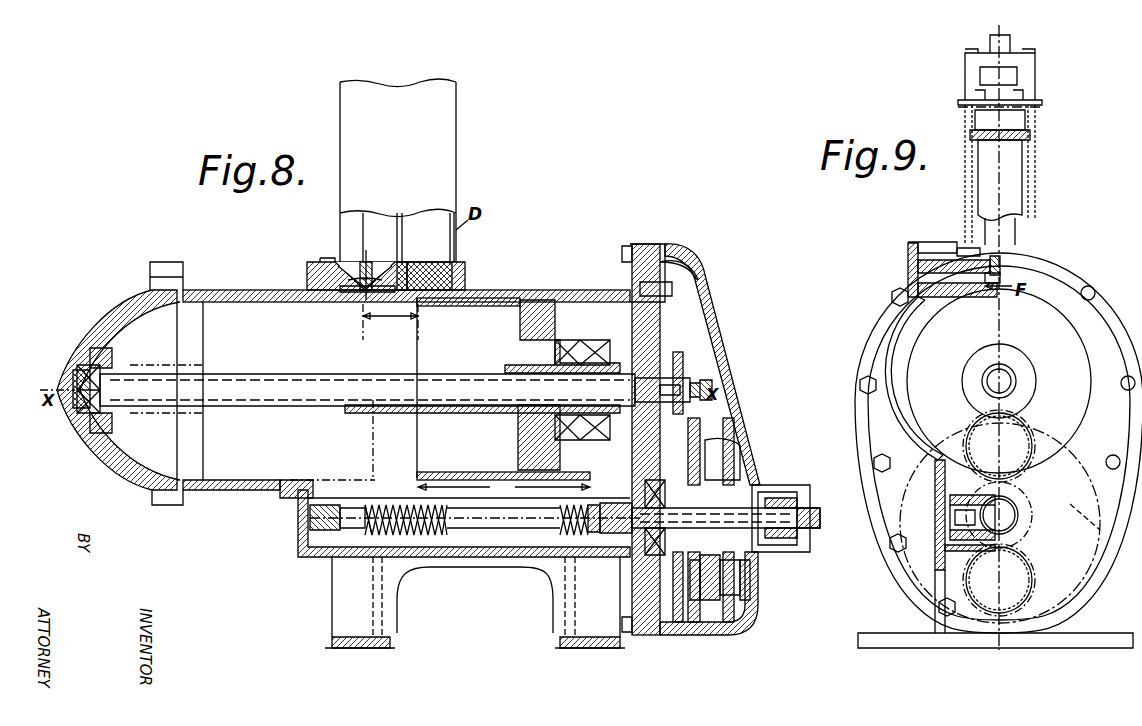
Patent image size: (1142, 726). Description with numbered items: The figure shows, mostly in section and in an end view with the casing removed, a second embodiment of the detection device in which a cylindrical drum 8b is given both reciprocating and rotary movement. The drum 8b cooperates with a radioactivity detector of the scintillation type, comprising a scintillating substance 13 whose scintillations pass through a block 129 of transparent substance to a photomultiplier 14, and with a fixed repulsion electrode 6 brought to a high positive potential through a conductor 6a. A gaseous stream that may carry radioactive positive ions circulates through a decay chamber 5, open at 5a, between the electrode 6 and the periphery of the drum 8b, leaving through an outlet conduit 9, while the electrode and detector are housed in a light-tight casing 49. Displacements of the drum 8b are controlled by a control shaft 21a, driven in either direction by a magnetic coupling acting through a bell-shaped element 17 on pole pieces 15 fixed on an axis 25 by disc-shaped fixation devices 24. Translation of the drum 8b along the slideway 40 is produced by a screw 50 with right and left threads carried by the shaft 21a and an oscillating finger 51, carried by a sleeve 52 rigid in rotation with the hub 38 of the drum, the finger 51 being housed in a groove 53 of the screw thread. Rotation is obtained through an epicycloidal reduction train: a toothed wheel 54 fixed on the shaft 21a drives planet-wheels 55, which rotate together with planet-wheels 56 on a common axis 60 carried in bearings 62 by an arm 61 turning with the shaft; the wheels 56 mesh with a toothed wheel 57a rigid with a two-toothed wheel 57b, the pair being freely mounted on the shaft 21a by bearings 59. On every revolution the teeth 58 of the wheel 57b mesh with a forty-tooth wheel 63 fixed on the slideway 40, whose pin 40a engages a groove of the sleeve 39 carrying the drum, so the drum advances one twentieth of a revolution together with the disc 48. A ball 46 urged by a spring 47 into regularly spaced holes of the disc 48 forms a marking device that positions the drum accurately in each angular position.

In FIG. 8, the decay chamber 5 is at (308, 264).
In FIG. 9, the decay chamber 5 is at (978, 262).
In FIG. 8, the opening of decay chamber 5a is at (358, 297).
In FIG. 9, the opening of decay chamber 5a is at (1001, 298).
In FIG. 8, the fixed repulsion electrode 6 is at (372, 262).
In FIG. 9, the fixed repulsion electrode 6 is at (1001, 268).
In FIG. 8, the conductor 6a is at (382, 260).
In FIG. 8, the cylindrical drum 8b is at (482, 295).
In FIG. 8, the outlet conduit 9 is at (348, 270).
In FIG. 9, the outlet conduit 9 is at (925, 277).
In FIG. 8, the scintillating substance 13 is at (420, 302).
In FIG. 8, the photomultiplier 14 is at (422, 228).
In FIG. 8, the pole pieces 15 is at (775, 494).
In FIG. 8, the bell-shaped element 17 is at (800, 492).
In FIG. 8, the control shaft 21a is at (790, 538).
In FIG. 8, the disc-shaped fixation devices 24 is at (798, 503).
In FIG. 8, the axis 25 is at (802, 520).
In FIG. 8, the hub 38 is at (535, 441).
In FIG. 8, the sleeve 39 is at (465, 376).
In FIG. 8, the slideway 40 is at (283, 378).
In FIG. 9, the slideway 40 is at (1003, 376).
In FIG. 9, the pin 40a is at (985, 384).
In FIG. 8, the ball 46 is at (630, 310).
In FIG. 8, the spring 47 is at (668, 330).
In FIG. 8, the disc 48 is at (632, 330).
In FIG. 8, the casing 49 is at (445, 104).
In FIG. 8, the screw 50 is at (470, 535).
In FIG. 8, the oscillating finger 51 is at (560, 520).
In FIG. 8, the sleeve 52 is at (625, 535).
In FIG. 8, the groove 53 is at (580, 548).
In FIG. 8, the toothed wheel 54 is at (722, 560).
In FIG. 9, the toothed wheel 54 is at (1020, 497).
In FIG. 9, the planet-wheels 55 is at (1030, 432).
In FIG. 9, the planet-wheels 56 is at (999, 513).
In FIG. 8, the toothed wheel 57a is at (718, 590).
In FIG. 9, the toothed wheel 57a is at (1020, 515).
In FIG. 8, the toothed wheel having two teeth 57b is at (650, 560).
In FIG. 9, the toothed wheel having two teeth 57b is at (1085, 458).
In FIG. 8, the teeth 58 is at (700, 388).
In FIG. 8, the bearings 59 is at (740, 460).
In FIG. 8, the common axis 60 is at (748, 598).
In FIG. 8, the arm 61 is at (740, 575).
In FIG. 8, the bearings 62 is at (685, 600).
In FIG. 8, the toothed wheel 63 is at (684, 368).
In FIG. 8, the block of transparent substance 129 is at (425, 272).